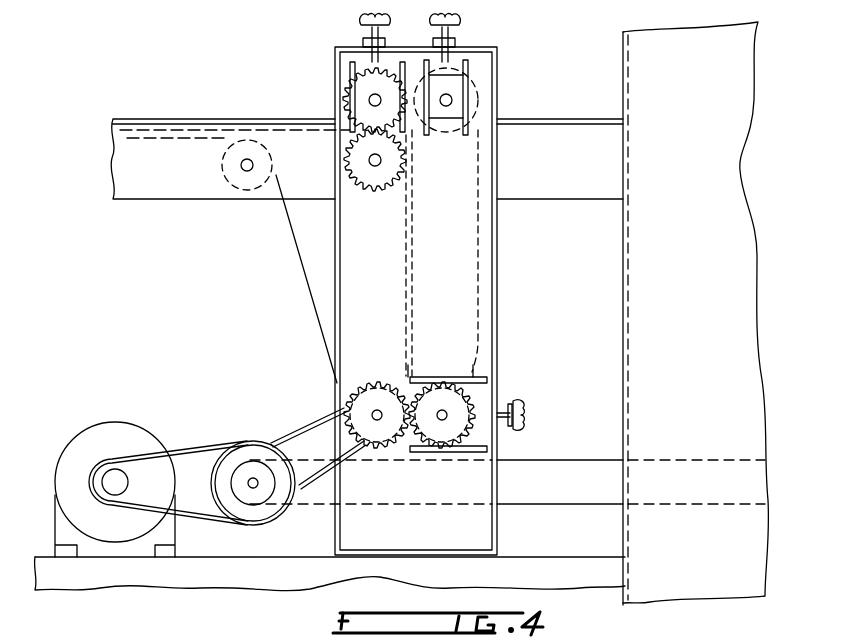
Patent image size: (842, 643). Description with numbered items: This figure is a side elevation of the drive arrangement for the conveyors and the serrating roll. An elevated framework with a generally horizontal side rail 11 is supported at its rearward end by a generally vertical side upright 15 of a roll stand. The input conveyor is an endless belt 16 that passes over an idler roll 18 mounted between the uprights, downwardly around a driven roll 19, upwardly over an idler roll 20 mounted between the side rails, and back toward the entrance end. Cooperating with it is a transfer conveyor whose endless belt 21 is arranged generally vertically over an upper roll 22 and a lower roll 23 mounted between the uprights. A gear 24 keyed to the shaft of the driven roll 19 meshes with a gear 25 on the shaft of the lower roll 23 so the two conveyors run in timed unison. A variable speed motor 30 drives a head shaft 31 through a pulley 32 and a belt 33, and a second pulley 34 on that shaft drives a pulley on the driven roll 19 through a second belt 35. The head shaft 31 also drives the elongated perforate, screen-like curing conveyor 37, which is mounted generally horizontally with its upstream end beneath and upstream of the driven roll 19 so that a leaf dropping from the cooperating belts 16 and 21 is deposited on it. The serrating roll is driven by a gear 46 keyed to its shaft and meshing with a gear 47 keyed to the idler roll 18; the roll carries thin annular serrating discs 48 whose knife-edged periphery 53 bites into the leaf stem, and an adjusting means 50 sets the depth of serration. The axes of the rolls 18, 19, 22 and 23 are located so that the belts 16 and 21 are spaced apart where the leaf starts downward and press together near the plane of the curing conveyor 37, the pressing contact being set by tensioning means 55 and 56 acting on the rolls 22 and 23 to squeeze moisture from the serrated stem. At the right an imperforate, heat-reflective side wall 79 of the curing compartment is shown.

The side rail 11 is at (168, 199).
The side upright 15 is at (493, 305).
The belt 16 is at (176, 131).
The idler roll 18 is at (400, 175).
The driven roll 19 is at (368, 447).
The idler roll 20 is at (232, 158).
The endless belt 21 is at (478, 250).
The upper roll 22 is at (444, 126).
The lower roll 23 is at (470, 366).
The gear 24 is at (388, 386).
The gear 25 is at (436, 448).
The variable speed motor 30 is at (125, 405).
The head shaft 31 is at (258, 490).
The pulley 32 is at (262, 446).
The belt 33 is at (212, 446).
The second pulley 34 is at (245, 485).
The second belt 35 is at (320, 398).
The curing conveyor 37 is at (560, 461).
The gear 46 is at (352, 98).
The gear 47 is at (386, 192).
The serrating discs 48 is at (330, 600).
The adjusting means 50 is at (362, 28).
The periphery 53 is at (350, 598).
The tensioning means 55 is at (438, 24).
The tensioning means 56 is at (514, 425).
The side wall 79 is at (697, 364).